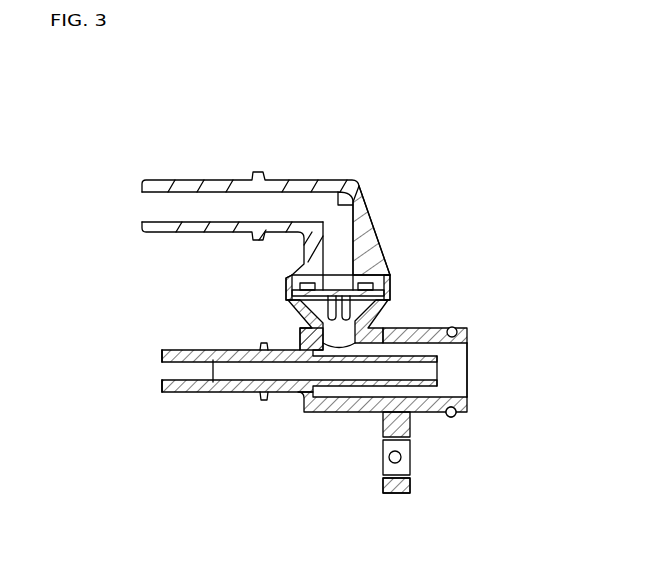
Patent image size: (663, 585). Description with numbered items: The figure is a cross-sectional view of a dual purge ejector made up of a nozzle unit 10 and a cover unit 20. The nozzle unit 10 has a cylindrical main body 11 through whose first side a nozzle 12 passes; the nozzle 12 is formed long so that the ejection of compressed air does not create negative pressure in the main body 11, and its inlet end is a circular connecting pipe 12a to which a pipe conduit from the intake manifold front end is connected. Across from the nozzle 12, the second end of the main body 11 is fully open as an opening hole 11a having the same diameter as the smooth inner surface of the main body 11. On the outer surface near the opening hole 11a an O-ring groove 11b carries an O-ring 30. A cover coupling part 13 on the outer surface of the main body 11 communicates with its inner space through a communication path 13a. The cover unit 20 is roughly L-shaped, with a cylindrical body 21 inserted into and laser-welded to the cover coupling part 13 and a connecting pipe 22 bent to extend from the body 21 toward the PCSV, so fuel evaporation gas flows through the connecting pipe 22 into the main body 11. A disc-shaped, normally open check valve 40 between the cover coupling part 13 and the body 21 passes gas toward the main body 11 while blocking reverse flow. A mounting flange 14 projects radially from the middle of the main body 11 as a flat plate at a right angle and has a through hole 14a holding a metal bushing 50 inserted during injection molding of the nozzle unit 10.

The nozzle unit 10 is at (288, 461).
The main body 11 is at (476, 312).
The opening hole 11a is at (453, 365).
The O-ring groove 11b is at (456, 416).
The nozzle 12 is at (349, 413).
The connecting pipe 12a is at (186, 393).
The cover coupling part 13 is at (285, 290).
The communication path 13a is at (333, 332).
The mounting flange 14 is at (394, 494).
The through hole 14a is at (410, 480).
The cover unit 20 is at (378, 156).
The body 21 is at (377, 220).
The connecting pipe 22 is at (197, 180).
The O-ring 30 is at (452, 418).
The check valve 40 is at (387, 294).
The bushing 50 is at (383, 468).